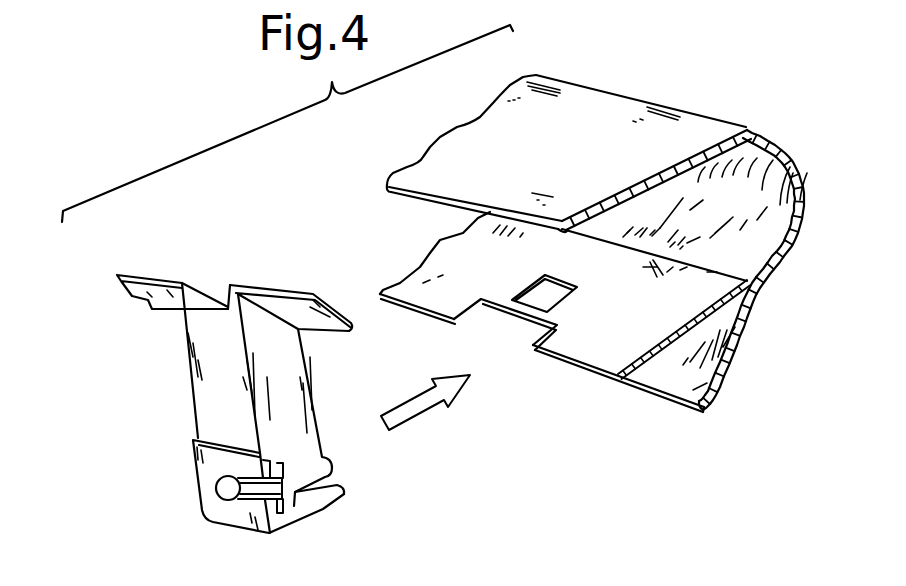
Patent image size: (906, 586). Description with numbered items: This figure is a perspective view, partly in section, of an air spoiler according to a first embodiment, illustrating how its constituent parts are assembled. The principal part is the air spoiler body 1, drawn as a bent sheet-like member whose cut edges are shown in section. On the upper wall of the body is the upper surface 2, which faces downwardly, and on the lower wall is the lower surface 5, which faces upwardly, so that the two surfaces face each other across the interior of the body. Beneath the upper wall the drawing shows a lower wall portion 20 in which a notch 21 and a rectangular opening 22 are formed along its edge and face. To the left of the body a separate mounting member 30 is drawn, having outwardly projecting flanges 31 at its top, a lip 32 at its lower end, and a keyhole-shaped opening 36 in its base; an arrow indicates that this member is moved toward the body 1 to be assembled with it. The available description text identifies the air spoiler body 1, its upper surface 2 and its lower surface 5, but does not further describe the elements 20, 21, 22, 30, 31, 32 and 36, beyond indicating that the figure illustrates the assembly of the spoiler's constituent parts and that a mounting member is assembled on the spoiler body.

The air spoiler body 1 is at (767, 135).
The upper surface 2 is at (607, 105).
The lower surface 5 is at (748, 362).
The lower plate 20 is at (658, 357).
The notch 21 is at (512, 316).
The rectangular hole 22 is at (565, 301).
The clip 30 is at (198, 380).
The flange 31 is at (143, 278).
The lip 32 is at (313, 493).
The keyhole slot 36 is at (223, 490).